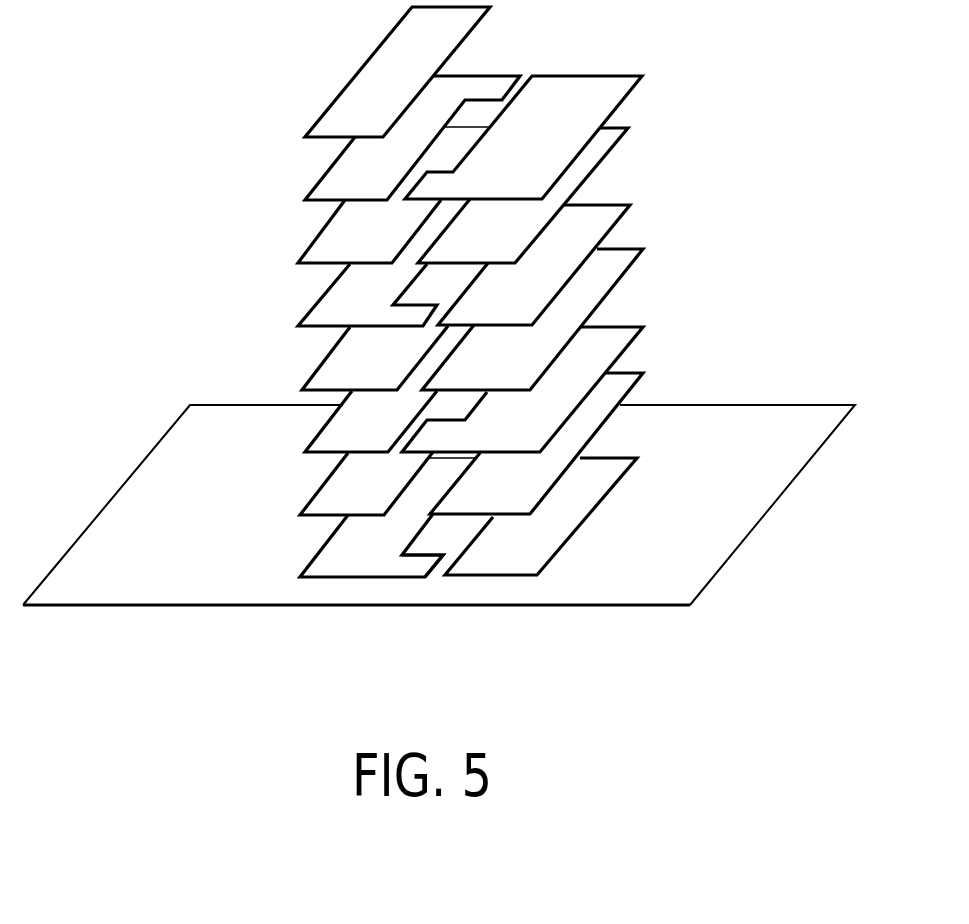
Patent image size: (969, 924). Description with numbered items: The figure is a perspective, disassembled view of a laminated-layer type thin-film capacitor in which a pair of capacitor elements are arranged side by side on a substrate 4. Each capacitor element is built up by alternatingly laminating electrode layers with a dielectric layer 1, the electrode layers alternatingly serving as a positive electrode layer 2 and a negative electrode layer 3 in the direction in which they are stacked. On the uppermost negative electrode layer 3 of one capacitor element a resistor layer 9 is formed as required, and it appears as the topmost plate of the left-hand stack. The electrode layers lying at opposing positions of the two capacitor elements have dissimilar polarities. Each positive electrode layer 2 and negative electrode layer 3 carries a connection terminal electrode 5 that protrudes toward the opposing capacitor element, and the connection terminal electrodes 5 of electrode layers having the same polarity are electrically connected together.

The dielectric layer 1 is at (605, 140).
The positive electrode layer 2 is at (612, 93).
The negative electrode layer 3 is at (331, 182).
The substrate 4 is at (748, 511).
The connection terminal electrode 5 is at (417, 567).
The resistor layer 9 is at (353, 84).